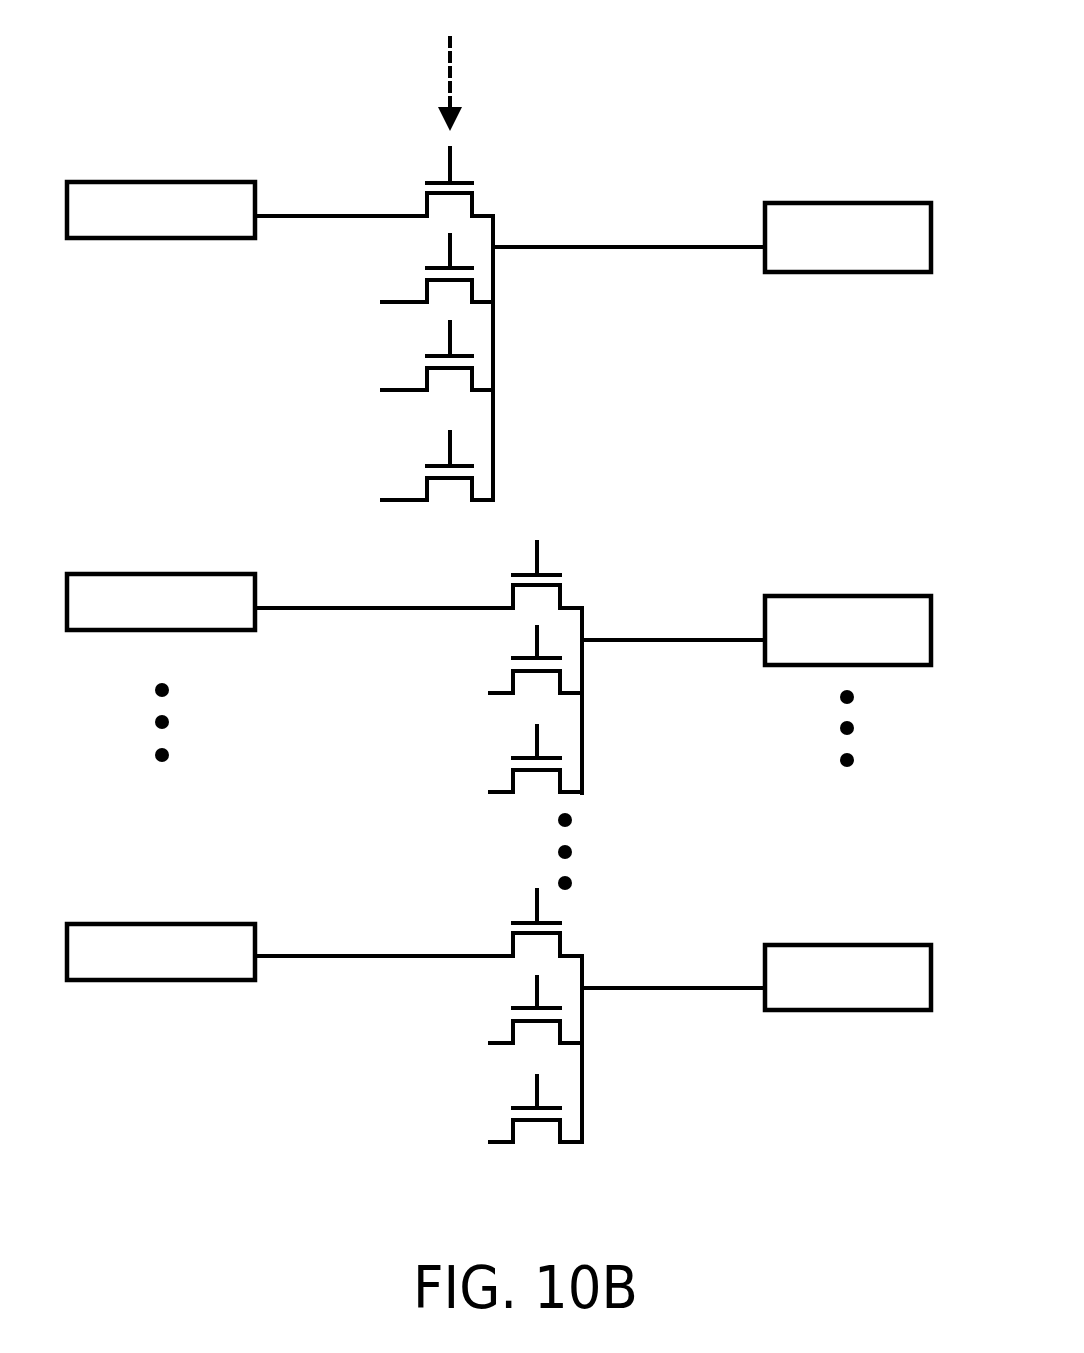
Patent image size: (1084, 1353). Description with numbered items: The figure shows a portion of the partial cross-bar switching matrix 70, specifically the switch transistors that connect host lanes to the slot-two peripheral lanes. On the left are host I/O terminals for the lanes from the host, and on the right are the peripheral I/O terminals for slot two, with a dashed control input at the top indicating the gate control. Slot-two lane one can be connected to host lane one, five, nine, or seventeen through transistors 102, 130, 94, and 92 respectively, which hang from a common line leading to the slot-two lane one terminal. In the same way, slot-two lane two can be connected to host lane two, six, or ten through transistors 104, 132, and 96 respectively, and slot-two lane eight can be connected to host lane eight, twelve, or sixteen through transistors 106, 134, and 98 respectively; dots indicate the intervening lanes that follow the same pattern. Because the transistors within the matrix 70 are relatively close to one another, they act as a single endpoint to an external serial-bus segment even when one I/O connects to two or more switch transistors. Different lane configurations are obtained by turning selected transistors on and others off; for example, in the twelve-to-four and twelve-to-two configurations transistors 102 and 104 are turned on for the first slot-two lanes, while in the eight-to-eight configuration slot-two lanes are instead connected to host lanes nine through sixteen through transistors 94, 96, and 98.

The partial cross-bar switching matrix 70 is at (222, 1193).
The transistor 102 is at (473, 203).
The transistor 130 is at (443, 266).
The transistor 92 is at (443, 354).
The transistor 94 is at (443, 464).
The transistor 104 is at (561, 597).
The transistor 132 is at (529, 658).
The transistor 96 is at (529, 757).
The transistor 106 is at (561, 945).
The transistor 134 is at (529, 1008).
The transistor 98 is at (529, 1107).